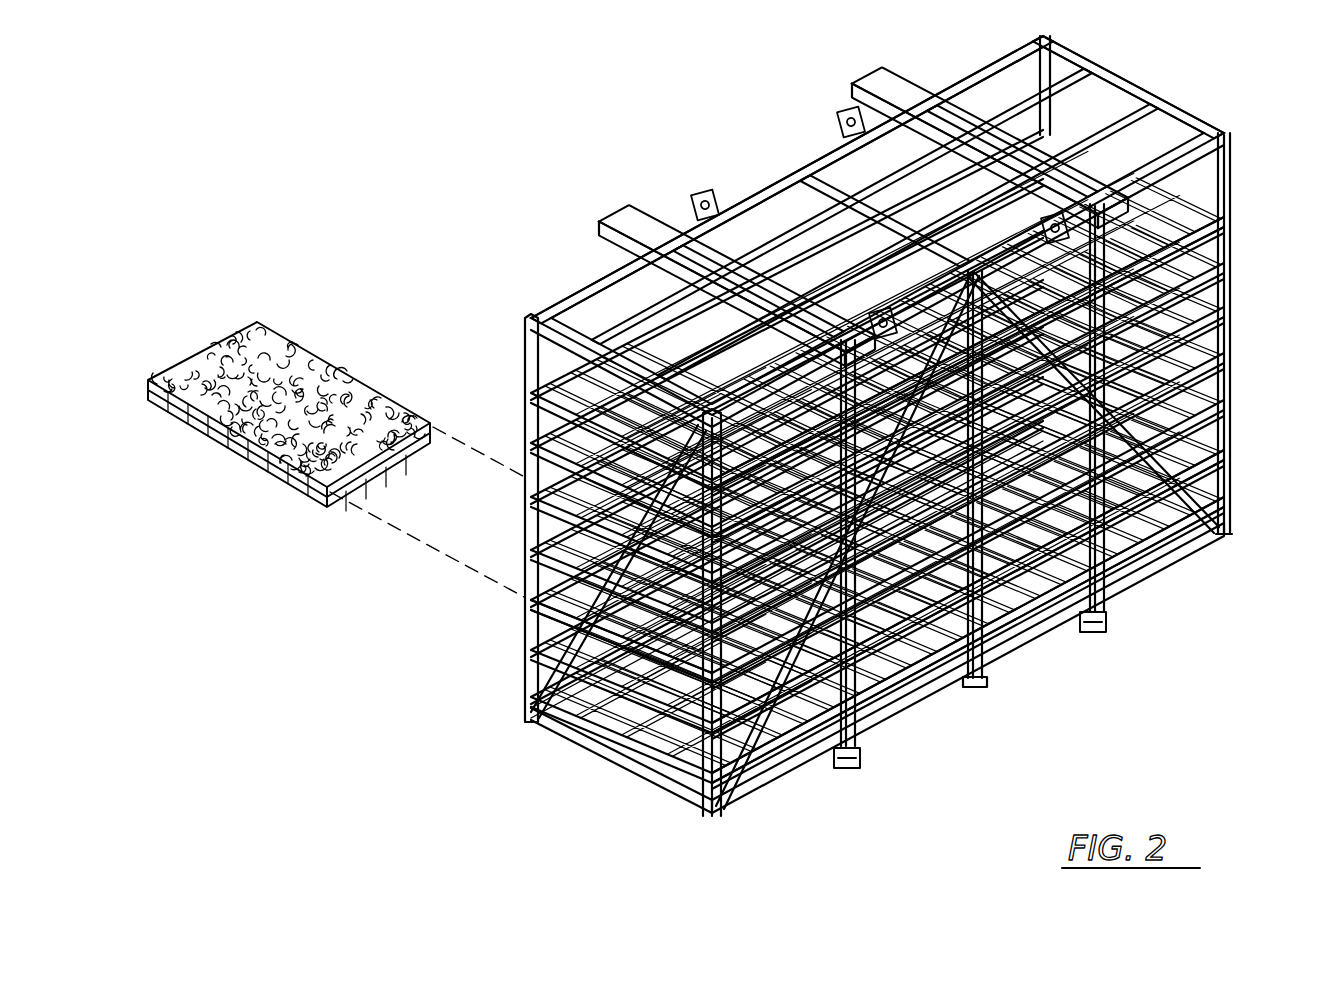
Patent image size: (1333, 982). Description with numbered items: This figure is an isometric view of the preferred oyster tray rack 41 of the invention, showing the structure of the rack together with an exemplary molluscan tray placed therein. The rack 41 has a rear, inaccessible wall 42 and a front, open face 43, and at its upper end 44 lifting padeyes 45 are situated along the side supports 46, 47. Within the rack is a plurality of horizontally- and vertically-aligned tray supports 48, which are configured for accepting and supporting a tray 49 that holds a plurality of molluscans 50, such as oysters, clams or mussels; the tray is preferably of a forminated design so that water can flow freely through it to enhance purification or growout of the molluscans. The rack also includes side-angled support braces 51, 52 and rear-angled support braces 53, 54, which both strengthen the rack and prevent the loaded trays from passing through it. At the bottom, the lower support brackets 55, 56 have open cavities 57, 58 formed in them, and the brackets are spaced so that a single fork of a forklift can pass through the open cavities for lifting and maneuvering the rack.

The rack 41 is at (700, 775).
The rear, inaccessible wall 42 is at (897, 683).
The front, open face 43 is at (527, 640).
The upper end 44 is at (1150, 92).
The lifting padeyes 45 is at (703, 190).
The side support 46 is at (583, 290).
The side support 47 is at (1215, 158).
The tray supports 48 is at (536, 578).
The tray 49 is at (285, 455).
The molluscans 50 is at (305, 378).
The side-angled support brace 51 is at (598, 700).
The side-angled support brace 52 is at (1110, 242).
The rear-angled support brace 53 is at (790, 690).
The rear-angled support brace 54 is at (1150, 465).
The lower support bracket 55 is at (770, 735).
The lower support bracket 56 is at (1035, 618).
The open cavity 57 is at (843, 768).
The open cavity 58 is at (1090, 640).